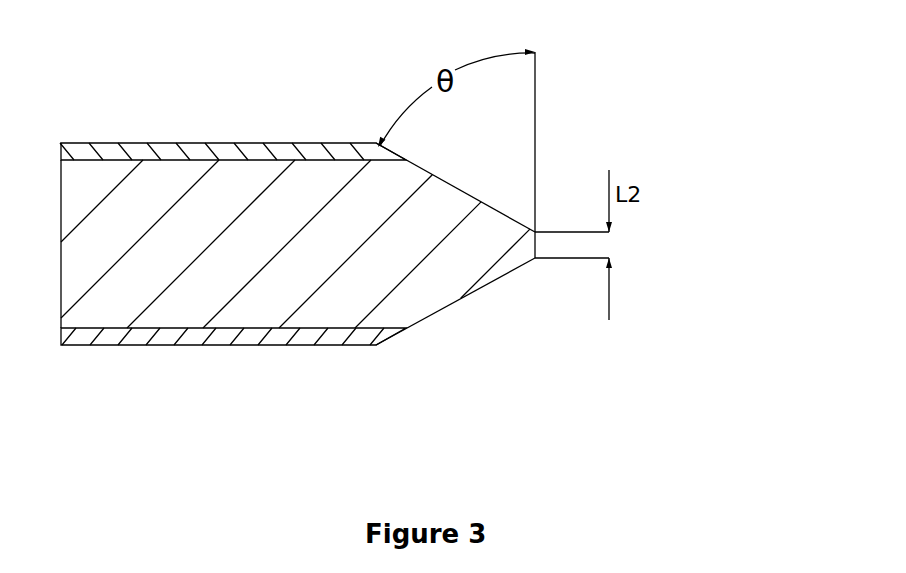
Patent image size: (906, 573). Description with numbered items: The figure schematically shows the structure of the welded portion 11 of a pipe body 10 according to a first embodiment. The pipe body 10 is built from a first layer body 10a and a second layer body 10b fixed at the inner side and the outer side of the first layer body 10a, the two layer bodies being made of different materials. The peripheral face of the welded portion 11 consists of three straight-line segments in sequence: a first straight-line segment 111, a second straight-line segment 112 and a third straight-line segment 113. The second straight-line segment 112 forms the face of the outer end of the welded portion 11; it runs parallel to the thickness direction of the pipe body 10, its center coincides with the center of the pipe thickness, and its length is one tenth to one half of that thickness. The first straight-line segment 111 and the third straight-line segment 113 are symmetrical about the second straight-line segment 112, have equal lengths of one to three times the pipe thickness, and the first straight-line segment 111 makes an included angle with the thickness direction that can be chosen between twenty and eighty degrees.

The pipe body 10 is at (295, 245).
The first layer body 10a is at (283, 436).
The second layer body 10b is at (136, 151).
The welded portion 11 is at (579, 236).
The first straight-line segment 111 is at (485, 160).
The second straight-line segment 112 is at (537, 245).
The third straight-line segment 113 is at (420, 321).